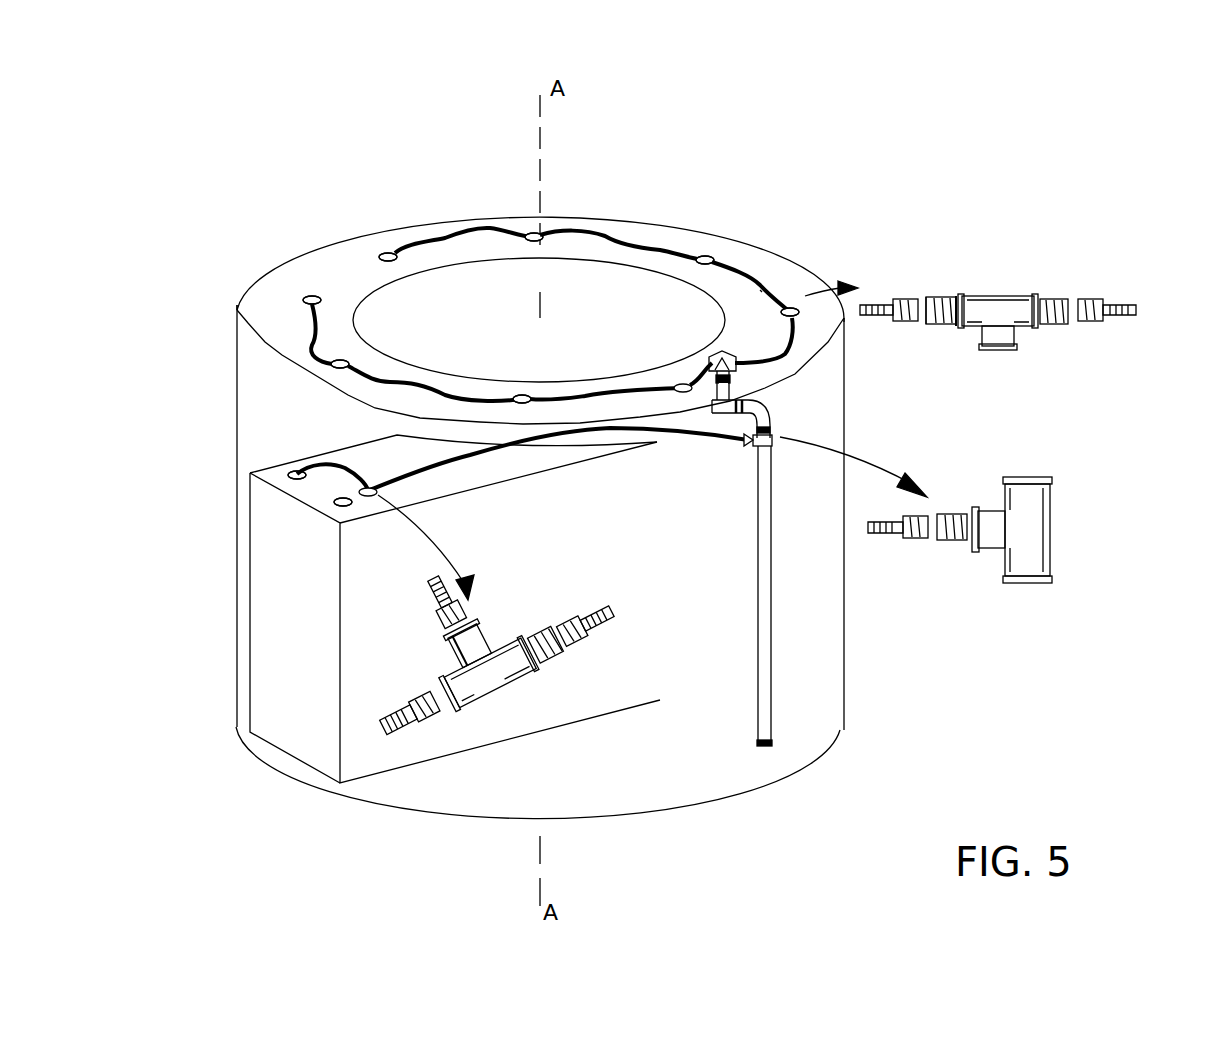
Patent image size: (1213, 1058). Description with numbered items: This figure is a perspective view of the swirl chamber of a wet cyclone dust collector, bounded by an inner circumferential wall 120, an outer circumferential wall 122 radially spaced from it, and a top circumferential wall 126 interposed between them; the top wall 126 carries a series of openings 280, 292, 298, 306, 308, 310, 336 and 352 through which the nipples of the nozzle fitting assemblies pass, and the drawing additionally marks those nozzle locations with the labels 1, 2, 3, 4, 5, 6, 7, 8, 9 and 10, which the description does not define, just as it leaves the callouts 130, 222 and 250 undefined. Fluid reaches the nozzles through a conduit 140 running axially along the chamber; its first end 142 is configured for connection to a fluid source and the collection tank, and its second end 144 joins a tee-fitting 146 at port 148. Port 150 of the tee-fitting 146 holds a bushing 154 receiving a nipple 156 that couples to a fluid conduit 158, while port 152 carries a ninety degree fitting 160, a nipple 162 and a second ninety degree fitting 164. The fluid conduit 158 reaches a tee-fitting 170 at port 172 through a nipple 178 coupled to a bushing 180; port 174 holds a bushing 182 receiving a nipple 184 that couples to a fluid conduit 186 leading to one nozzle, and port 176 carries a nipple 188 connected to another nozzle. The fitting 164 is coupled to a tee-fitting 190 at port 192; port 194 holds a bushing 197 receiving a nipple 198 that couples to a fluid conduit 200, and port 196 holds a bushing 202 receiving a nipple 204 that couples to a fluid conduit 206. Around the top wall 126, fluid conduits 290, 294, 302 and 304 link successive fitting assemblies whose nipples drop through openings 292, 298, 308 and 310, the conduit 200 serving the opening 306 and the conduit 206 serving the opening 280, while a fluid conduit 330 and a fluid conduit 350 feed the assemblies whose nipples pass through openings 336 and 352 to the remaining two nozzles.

The nozzle position 1 is at (266, 508).
The nozzle position 2 is at (317, 538).
The nozzle position 3 is at (515, 427).
The nozzle position 4 is at (689, 423).
The nozzle position 5 is at (807, 330).
The nozzle position 6 is at (709, 254).
The nozzle position 7 is at (527, 226).
The nozzle position 8 is at (369, 246).
The nozzle position 9 is at (279, 310).
The nozzle position 10 is at (314, 395).
The inner circumferential wall 120 is at (497, 260).
The outer circumferential wall 122 is at (250, 385).
The top circumferential wall 126 is at (738, 250).
The housing 130 is at (363, 758).
The conduit 140 is at (775, 737).
The first end 142 is at (757, 745).
The second end 144 is at (773, 440).
The fitting 146 is at (1047, 553).
The port 148 is at (1042, 583).
The port 150 is at (972, 550).
The port 152 is at (1030, 477).
The bushing 154 is at (940, 543).
The nipple 156 is at (887, 534).
The fluid conduit 158 is at (475, 461).
The fitting 160 is at (748, 414).
The nipple 162 is at (735, 380).
The fitting 164 is at (716, 398).
The fitting 170 is at (512, 673).
The port 172 is at (517, 650).
The port 174 is at (463, 650).
The port 176 is at (453, 697).
The nipple 178 is at (583, 628).
The bushing 180 is at (547, 660).
The bushing 182 is at (470, 617).
The nipple 184 is at (430, 588).
The fluid conduit 186 is at (337, 463).
The nipple 188 is at (407, 737).
The fitting 190 is at (995, 303).
The port 192 is at (1007, 350).
The port 194 is at (960, 298).
The port 196 is at (1045, 297).
The bushing 197 is at (947, 325).
The nipple 198 is at (878, 297).
The fluid conduit 200 is at (713, 362).
The bushing 202 is at (1076, 297).
The nipple 204 is at (1117, 317).
The fluid conduit 206 is at (730, 353).
The nozzle 222 is at (293, 470).
The nozzle 250 is at (347, 505).
The opening 280 is at (796, 308).
The fluid conduit 290 is at (782, 330).
The opening 292 is at (700, 255).
The fluid conduit 294 is at (604, 235).
The opening 298 is at (533, 235).
The fluid conduit 302 is at (565, 387).
The fluid conduit 304 is at (383, 380).
The opening 306 is at (700, 380).
The opening 308 is at (520, 395).
The opening 310 is at (337, 365).
The fluid conduit 330 is at (437, 240).
The opening 336 is at (392, 252).
The fluid conduit 350 is at (250, 307).
The opening 352 is at (310, 295).